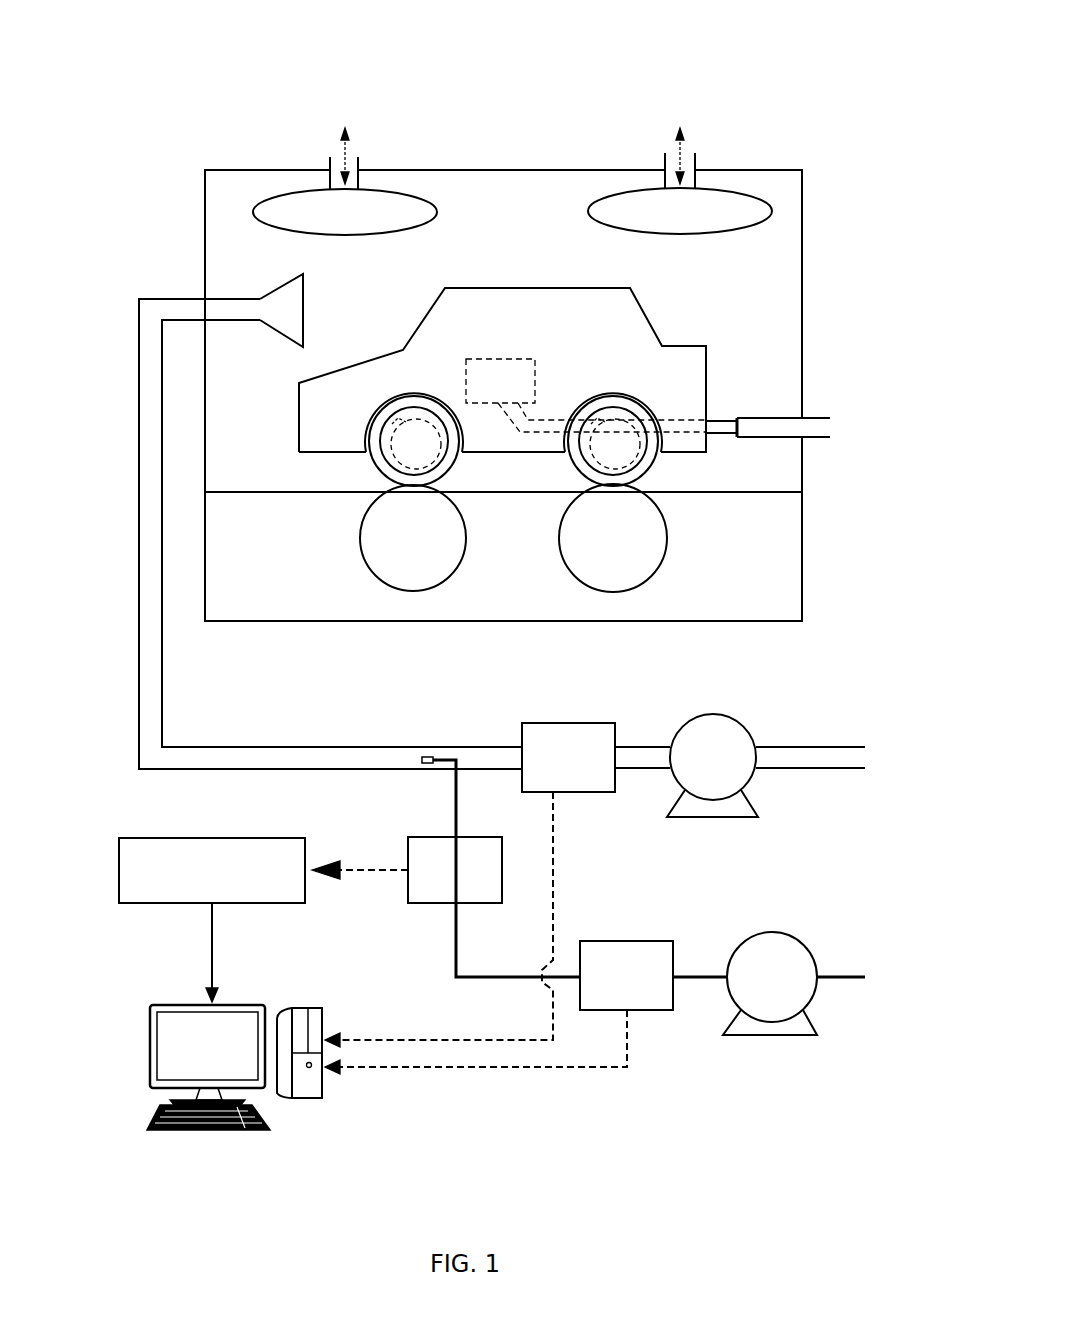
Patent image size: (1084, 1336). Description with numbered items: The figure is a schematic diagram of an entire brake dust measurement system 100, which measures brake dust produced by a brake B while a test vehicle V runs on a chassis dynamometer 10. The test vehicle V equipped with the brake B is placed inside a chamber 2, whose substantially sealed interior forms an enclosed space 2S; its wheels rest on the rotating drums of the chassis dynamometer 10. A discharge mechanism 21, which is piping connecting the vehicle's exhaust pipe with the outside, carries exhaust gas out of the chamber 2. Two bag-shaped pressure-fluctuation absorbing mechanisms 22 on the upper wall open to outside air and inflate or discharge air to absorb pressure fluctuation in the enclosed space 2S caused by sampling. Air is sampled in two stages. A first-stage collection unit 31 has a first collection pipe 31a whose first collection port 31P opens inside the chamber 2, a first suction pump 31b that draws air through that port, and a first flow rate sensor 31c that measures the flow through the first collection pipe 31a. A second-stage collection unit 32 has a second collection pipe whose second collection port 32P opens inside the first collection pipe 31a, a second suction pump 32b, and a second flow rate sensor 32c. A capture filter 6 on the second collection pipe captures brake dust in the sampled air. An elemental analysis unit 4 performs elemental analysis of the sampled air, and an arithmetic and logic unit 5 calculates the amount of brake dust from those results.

The brake dust measurement system 100 is at (208, 67).
The chamber 2 is at (520, 170).
The enclosed space 2S is at (560, 270).
The pressure-fluctuation absorbing mechanism 22 is at (437, 205).
The test vehicle V is at (423, 320).
The brake B is at (387, 457).
The chassis dynamometer 10 is at (667, 540).
The discharge mechanism 21 is at (772, 418).
The first-stage collection unit 31 is at (100, 602).
The first collection port 31P is at (305, 304).
The first collection pipe 31a is at (139, 503).
The first flow rate sensor 31c is at (567, 722).
The first suction pump 31b is at (713, 714).
The second-stage collection unit 32 is at (684, 1030).
The second collection port 32P is at (425, 752).
The second flow rate sensor 32c is at (626, 940).
The second suction pump 32b is at (772, 932).
The capture filter 6 is at (428, 905).
The elemental analysis unit 4 is at (117, 870).
The arithmetic and logic unit 5 is at (148, 1048).